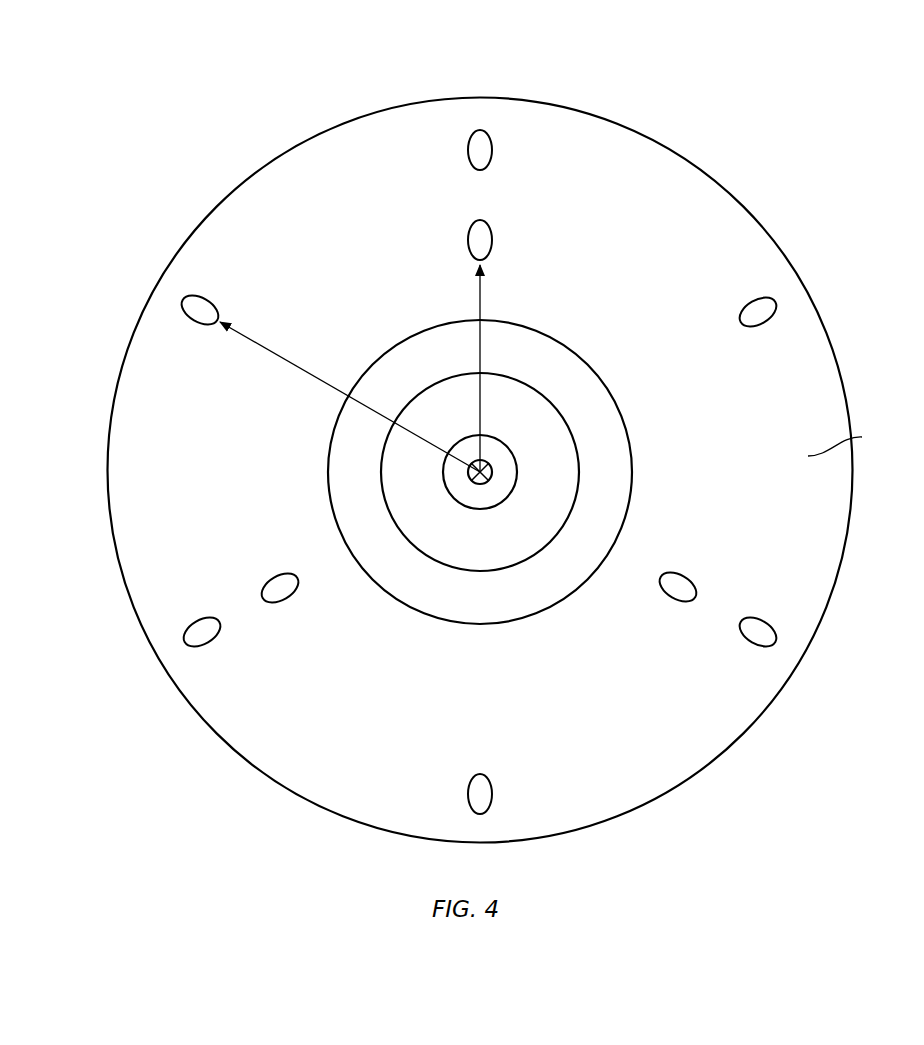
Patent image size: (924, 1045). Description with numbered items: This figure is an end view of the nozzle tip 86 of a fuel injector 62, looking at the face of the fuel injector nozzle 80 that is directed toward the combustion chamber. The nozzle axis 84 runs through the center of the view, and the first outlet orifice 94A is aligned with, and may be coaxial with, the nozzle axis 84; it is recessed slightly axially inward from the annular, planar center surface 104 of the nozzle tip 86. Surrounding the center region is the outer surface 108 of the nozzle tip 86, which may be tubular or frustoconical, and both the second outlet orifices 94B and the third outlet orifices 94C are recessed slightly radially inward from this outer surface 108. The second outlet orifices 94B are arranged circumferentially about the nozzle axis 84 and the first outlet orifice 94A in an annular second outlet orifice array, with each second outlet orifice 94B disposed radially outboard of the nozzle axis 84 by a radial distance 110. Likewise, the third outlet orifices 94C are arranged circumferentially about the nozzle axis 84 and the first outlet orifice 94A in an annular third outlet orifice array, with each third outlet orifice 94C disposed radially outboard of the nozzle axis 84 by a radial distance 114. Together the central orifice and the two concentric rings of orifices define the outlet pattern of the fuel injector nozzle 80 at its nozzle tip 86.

The fuel injector 62 is at (744, 100).
The fuel injector nozzle 80 is at (745, 190).
The nozzle axis 84 is at (491, 478).
The nozzle tip 86 is at (608, 375).
The first outlet orifice 94A is at (468, 500).
The second outlet orifices 94B is at (493, 241).
The third outlet orifices 94C is at (493, 151).
The center surface 104 is at (610, 450).
The outer surface 108 is at (864, 440).
The radial distance 110 is at (477, 350).
The radial distance 114 is at (253, 346).